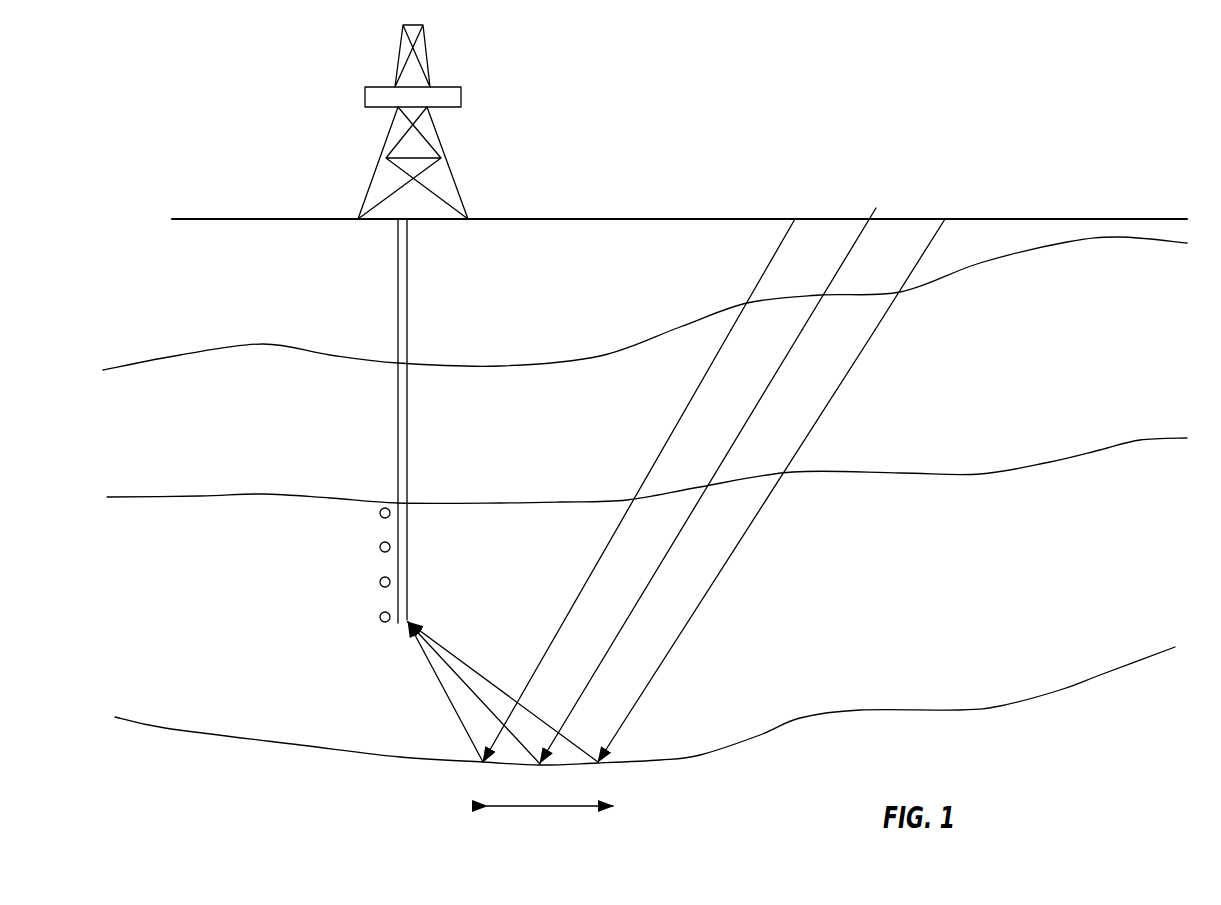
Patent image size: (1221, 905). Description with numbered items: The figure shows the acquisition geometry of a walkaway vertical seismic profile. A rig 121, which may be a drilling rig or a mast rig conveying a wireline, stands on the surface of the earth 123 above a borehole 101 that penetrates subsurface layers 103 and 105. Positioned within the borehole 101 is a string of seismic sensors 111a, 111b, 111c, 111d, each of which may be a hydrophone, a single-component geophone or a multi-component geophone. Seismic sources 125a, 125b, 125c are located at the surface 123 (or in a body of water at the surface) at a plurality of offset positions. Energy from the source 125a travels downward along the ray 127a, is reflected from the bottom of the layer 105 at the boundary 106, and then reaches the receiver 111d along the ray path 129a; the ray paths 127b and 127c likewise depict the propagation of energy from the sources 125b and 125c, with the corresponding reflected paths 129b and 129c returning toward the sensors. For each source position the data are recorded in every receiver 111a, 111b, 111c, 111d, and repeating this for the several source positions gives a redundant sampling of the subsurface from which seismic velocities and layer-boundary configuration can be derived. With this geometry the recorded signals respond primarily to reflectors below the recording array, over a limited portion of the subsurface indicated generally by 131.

The borehole 101 is at (397, 300).
The layer 103 is at (141, 306).
The layer 105 is at (141, 456).
The boundary 106 is at (165, 727).
The seismic sensor 111a is at (379, 515).
The seismic sensor 111b is at (379, 549).
The seismic sensor 111c is at (379, 584).
The seismic sensor 111d is at (379, 619).
The rig 121 is at (430, 83).
The surface of the earth 123 is at (618, 218).
The seismic source 125a is at (790, 228).
The seismic source 125b is at (857, 237).
The seismic source 125c is at (935, 230).
The ray 127a is at (657, 460).
The ray path 127b is at (730, 447).
The ray path 127c is at (835, 395).
The ray path 129a is at (430, 666).
The reflected ray path 129b is at (470, 690).
The reflected ray path 129c is at (452, 655).
The subsurface region 131 is at (568, 843).